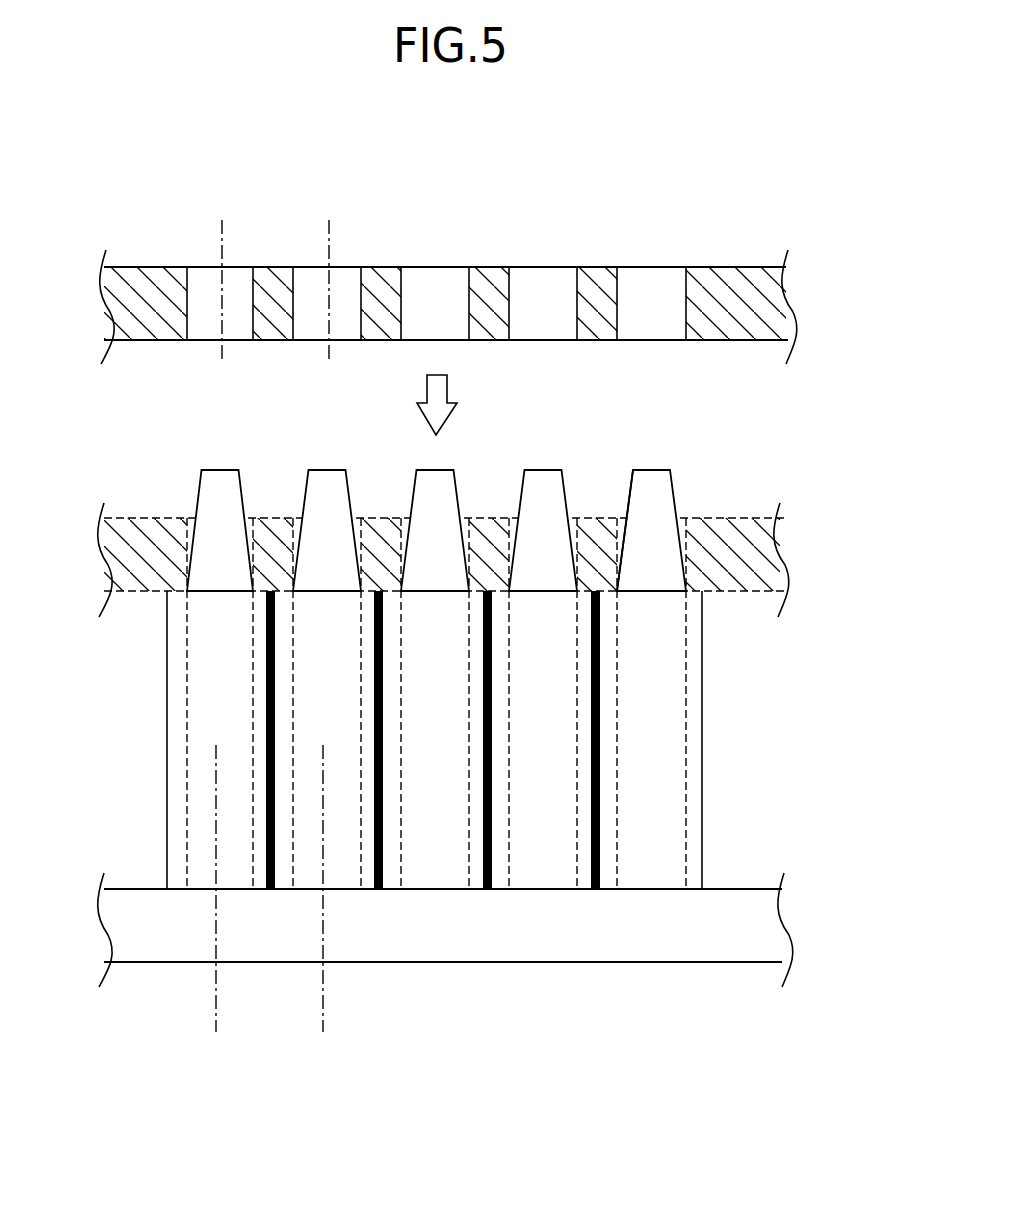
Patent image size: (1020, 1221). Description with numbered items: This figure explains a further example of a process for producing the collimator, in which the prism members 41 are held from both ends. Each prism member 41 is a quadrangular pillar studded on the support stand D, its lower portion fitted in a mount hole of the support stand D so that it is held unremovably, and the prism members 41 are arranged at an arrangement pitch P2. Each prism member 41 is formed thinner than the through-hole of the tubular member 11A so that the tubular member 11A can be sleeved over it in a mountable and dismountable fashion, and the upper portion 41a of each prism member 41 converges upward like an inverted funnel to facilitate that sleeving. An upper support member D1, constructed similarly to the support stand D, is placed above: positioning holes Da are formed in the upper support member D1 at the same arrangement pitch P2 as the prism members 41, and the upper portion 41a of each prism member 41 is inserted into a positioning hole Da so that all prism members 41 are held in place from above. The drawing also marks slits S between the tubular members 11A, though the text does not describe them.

The arrangement pitch P2 is at (329, 233).
The positioning hole Da is at (578, 275).
The upper support member D1 is at (715, 268).
The prism member 41 is at (543, 470).
The upper portion 41a is at (645, 514).
The tubular member 11A is at (713, 723).
The slit S is at (485, 884).
The support stand D is at (652, 935).